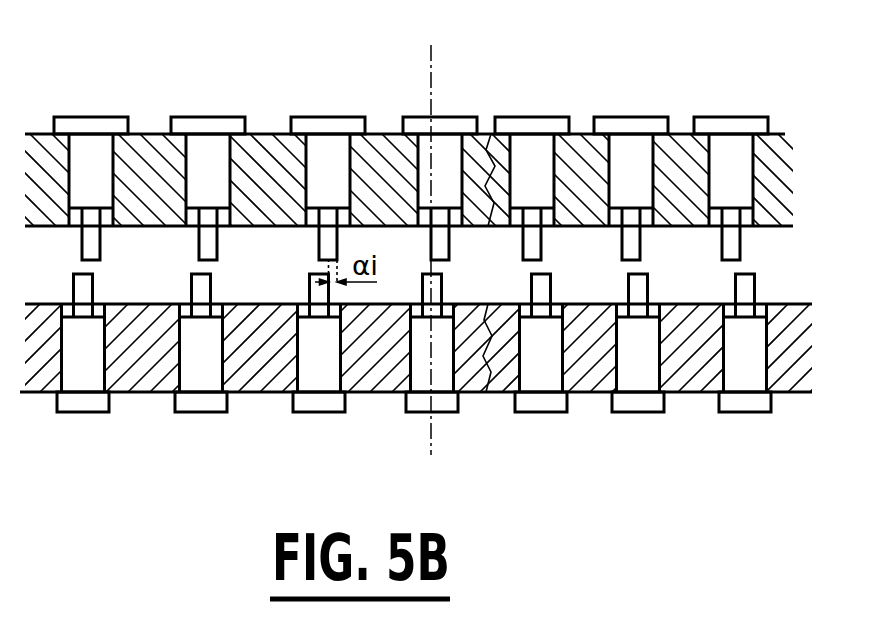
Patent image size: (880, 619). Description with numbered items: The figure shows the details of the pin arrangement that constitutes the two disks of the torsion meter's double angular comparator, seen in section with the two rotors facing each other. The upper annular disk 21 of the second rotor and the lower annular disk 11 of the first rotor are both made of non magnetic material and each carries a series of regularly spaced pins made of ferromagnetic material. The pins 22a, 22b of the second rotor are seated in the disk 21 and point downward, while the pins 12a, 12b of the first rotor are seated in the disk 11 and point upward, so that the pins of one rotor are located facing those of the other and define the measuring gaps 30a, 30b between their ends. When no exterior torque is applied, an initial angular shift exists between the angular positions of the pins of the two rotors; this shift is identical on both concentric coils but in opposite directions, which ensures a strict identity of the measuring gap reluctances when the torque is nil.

The annular disk 21 is at (137, 165).
The ferromagnetic pins 22b is at (323, 127).
The ferromagnetic pins 22a is at (616, 128).
The measuring gap 30b is at (200, 265).
The measuring gap 30a is at (732, 268).
The annular disk 11 is at (143, 372).
The ferromagnetic pins 12b is at (308, 403).
The ferromagnetic pins 12a is at (630, 403).